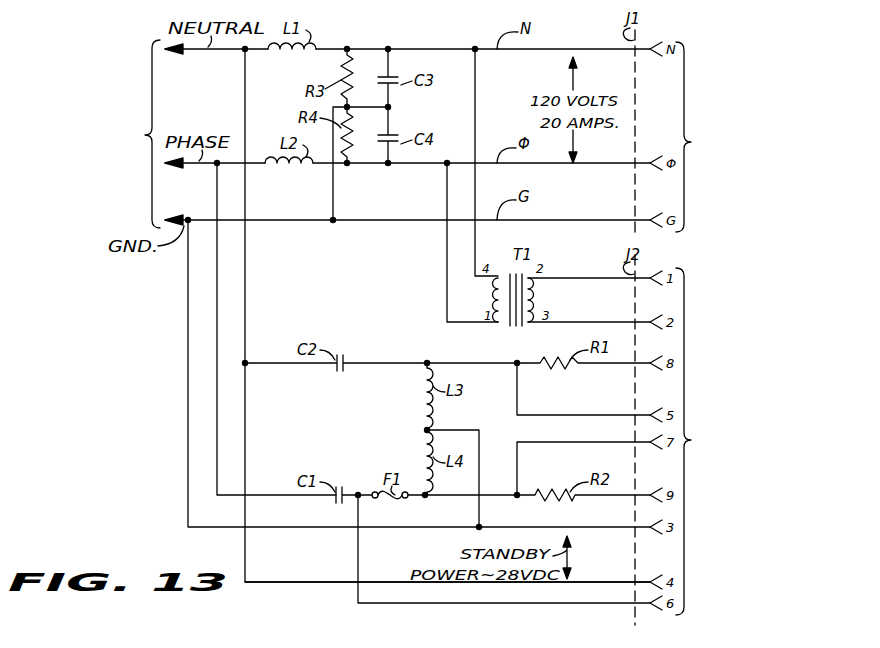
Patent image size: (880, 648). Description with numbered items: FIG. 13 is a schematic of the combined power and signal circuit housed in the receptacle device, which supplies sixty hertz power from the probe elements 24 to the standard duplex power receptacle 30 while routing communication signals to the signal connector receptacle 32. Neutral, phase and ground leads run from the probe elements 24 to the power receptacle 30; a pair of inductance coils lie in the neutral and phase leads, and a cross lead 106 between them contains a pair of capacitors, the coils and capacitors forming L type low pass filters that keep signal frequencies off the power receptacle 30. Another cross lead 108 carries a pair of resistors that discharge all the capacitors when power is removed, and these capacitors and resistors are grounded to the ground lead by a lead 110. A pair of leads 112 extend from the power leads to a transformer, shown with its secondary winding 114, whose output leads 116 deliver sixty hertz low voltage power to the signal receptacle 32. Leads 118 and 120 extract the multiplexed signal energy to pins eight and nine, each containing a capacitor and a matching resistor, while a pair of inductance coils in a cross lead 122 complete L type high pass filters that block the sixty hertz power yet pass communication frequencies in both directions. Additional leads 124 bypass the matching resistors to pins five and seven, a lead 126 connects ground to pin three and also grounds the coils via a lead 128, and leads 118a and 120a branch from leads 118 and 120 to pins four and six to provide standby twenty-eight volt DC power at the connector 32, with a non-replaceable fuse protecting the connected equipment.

The probe elements 24 is at (101, 134).
The duplex power receptacle 30 is at (758, 137).
The signal connector receptacle 32 is at (753, 441).
The cross lead 106 is at (391, 100).
The cross lead 108 is at (345, 58).
The lead 110 is at (334, 197).
The leads 112 is at (470, 270).
The transformer secondary winding 114 is at (532, 272).
The output leads 116 is at (575, 279).
The lead 118 is at (246, 297).
The lead 118a is at (272, 582).
The lead 120 is at (216, 293).
The lead 120a is at (396, 604).
The cross lead 122 is at (425, 430).
The additional leads 124 is at (572, 416).
The lead 126 is at (189, 421).
The lead 128 is at (460, 430).